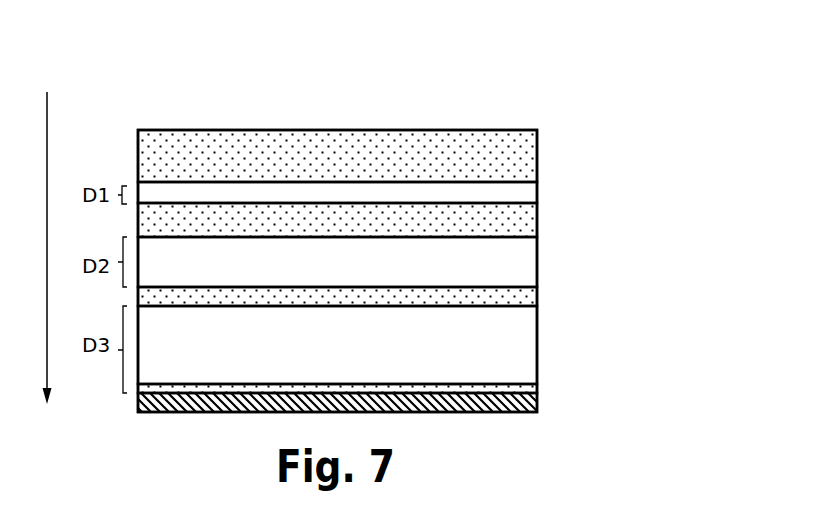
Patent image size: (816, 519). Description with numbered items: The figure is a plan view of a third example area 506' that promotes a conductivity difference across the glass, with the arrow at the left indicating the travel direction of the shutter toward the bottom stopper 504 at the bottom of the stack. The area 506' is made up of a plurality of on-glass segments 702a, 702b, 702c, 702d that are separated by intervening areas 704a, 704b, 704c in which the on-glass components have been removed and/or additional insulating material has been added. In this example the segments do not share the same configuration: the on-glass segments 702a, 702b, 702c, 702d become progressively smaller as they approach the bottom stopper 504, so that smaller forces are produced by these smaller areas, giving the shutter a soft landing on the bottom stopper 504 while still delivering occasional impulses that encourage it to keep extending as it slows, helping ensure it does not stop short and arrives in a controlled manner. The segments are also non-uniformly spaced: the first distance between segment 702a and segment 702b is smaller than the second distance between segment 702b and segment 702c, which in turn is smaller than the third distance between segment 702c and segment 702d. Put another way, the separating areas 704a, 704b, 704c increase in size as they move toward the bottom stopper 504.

The area promoting a conductivity difference 506' is at (384, 230).
The on-glass segment 702a is at (538, 157).
The area where on-glass components are removed 704a is at (538, 189).
The on-glass segment 702b is at (538, 220).
The area where on-glass components are removed 704b is at (538, 260).
The on-glass segment 702c is at (538, 296).
The area where on-glass components are removed 704c is at (538, 341).
The on-glass segment 702d is at (538, 389).
The bottom stopper 504 is at (538, 402).